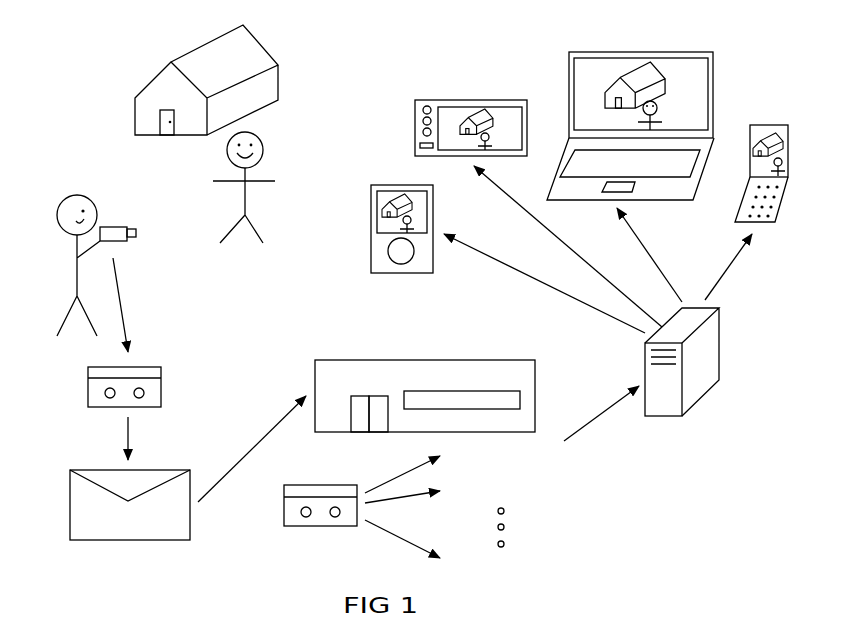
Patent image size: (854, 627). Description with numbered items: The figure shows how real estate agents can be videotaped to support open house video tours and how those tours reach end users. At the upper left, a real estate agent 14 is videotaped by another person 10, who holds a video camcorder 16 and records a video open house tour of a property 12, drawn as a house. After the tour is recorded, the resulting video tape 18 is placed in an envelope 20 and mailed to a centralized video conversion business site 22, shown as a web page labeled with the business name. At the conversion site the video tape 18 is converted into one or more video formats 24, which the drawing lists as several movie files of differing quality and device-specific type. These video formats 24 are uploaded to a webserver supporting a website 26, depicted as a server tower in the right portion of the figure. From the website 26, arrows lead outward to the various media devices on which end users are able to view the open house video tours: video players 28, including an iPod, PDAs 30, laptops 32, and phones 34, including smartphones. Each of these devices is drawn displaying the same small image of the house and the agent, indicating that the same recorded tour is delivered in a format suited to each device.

The person 10 is at (70, 195).
The property 12 is at (270, 52).
The real estate agent 14 is at (264, 146).
The video camcorder 16 is at (129, 243).
The video tape 18 is at (161, 368).
The envelope 20 is at (167, 470).
The centralized video conversion business site 22 is at (448, 360).
The video formats 24 is at (676, 455).
The website 26 is at (719, 348).
The video players 28 is at (434, 264).
The PDAs 30 is at (440, 100).
The laptops 32 is at (560, 70).
The phones 34 is at (765, 125).